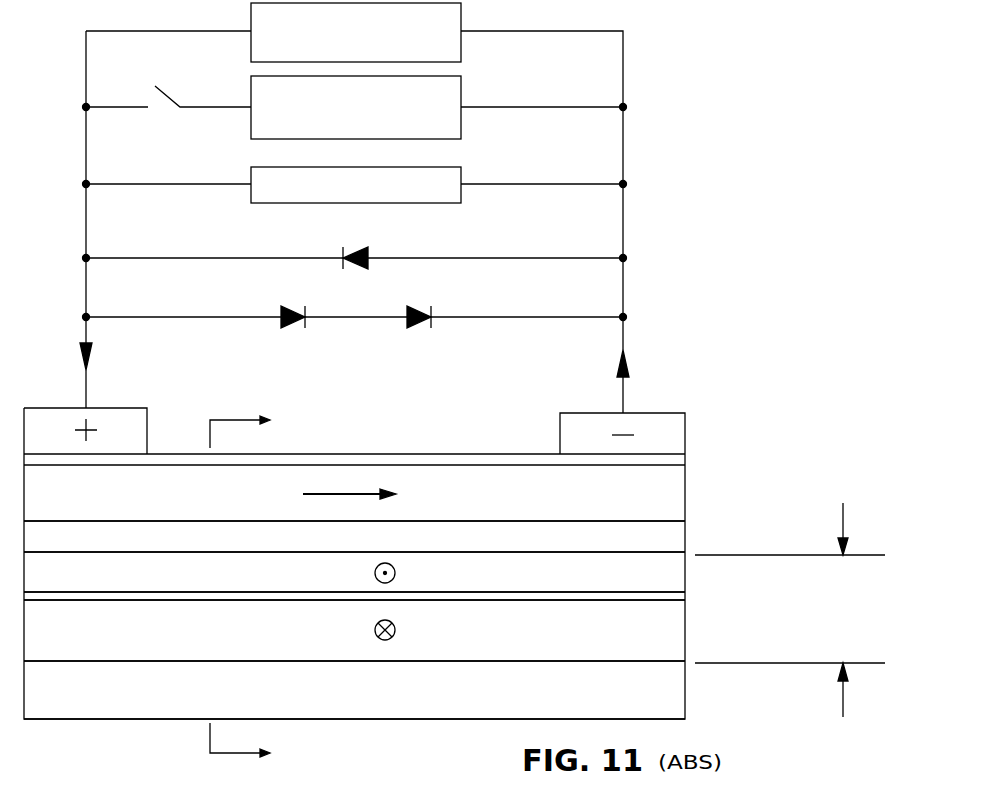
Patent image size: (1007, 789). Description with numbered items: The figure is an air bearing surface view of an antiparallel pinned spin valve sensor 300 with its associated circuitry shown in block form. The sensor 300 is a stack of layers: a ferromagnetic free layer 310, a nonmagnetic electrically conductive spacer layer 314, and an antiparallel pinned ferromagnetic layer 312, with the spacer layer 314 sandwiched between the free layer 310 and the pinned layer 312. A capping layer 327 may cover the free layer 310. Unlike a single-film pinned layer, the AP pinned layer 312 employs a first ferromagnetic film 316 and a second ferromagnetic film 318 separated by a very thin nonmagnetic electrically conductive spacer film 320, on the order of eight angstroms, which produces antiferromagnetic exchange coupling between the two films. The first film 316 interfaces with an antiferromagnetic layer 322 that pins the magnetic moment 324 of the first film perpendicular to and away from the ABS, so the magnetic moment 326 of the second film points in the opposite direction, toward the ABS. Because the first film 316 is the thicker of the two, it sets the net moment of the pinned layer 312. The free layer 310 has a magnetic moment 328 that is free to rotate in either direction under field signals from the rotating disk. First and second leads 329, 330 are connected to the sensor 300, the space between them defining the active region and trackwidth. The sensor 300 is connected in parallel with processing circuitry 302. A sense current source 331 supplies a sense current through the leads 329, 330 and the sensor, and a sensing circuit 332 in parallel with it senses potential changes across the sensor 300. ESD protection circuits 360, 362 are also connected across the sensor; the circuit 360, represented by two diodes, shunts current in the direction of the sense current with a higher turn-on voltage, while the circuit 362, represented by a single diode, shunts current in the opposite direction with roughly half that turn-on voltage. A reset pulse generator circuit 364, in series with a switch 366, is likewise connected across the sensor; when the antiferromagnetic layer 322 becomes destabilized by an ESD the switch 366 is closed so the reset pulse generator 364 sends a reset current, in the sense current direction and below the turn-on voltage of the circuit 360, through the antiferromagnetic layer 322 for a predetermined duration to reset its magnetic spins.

The processing circuitry 302 is at (695, 119).
The sensing circuit 332 is at (250, 44).
The switch 366 is at (164, 90).
The reset pulse generator circuit 364 is at (250, 126).
The sense current source 331 is at (250, 196).
The ESD protection circuit 362 is at (367, 255).
The ESD protection circuit 360 is at (405, 313).
The first lead 329 is at (124, 408).
The second lead 330 is at (575, 413).
The spin valve sensor 300 is at (706, 431).
The magnetic moment of the free layer 328 is at (349, 492).
The capping layer 327 is at (685, 466).
The free layer 310 is at (685, 496).
The spacer layer 314 is at (685, 540).
The second ferromagnetic film 318 is at (685, 576).
The spacer film 320 is at (685, 600).
The first ferromagnetic film 316 is at (685, 634).
The antiferromagnetic layer 322 is at (685, 699).
The magnetic moment of the second film 326 is at (374, 574).
The magnetic moment of the first film 324 is at (374, 631).
The antiparallel pinned ferromagnetic layer 312 is at (791, 610).